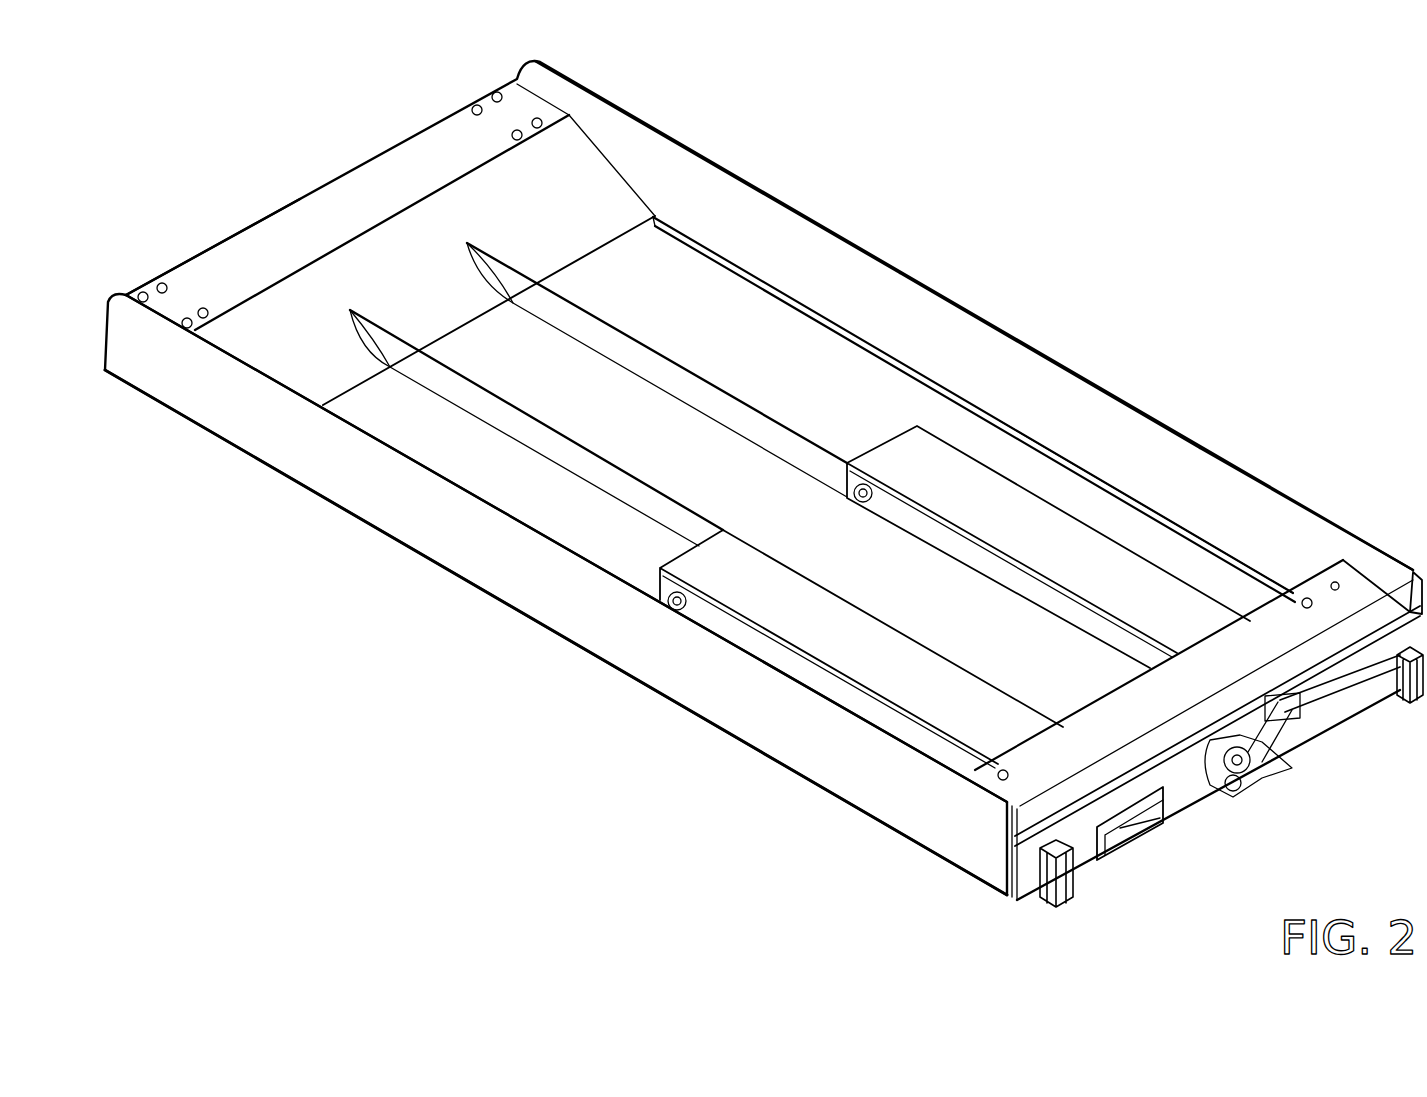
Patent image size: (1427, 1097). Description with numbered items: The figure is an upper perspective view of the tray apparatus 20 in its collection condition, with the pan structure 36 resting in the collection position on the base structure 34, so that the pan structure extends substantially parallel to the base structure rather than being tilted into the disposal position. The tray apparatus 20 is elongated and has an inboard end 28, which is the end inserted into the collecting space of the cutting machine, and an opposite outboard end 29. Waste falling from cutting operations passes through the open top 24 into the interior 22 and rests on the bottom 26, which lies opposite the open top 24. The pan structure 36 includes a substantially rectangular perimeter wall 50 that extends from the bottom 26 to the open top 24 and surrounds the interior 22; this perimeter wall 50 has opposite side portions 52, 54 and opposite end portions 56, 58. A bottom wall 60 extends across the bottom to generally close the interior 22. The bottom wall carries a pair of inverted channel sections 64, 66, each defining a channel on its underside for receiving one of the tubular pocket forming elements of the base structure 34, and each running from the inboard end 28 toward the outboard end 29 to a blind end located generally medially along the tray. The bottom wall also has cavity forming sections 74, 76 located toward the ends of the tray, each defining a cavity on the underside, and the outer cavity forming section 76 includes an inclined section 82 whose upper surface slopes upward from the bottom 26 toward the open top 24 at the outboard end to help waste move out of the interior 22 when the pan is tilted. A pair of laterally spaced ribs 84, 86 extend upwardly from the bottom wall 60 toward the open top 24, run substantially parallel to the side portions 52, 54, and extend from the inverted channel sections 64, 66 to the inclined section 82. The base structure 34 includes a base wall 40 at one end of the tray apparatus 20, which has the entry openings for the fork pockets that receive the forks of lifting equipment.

The tray apparatus 20 is at (1091, 239).
The interior 22 is at (1040, 407).
The open top 24 is at (1007, 512).
The bottom 26 is at (706, 718).
The inboard end 28 is at (347, 121).
The outboard end 29 is at (1107, 913).
The base structure 34 is at (1225, 817).
The pan structure 36 is at (890, 219).
The base wall 40 is at (1187, 797).
The perimeter wall 50 is at (1022, 325).
The side portion 52 is at (531, 585).
The side portion 54 is at (1245, 512).
The end portion 56 is at (252, 228).
The end portion 58 is at (1365, 622).
The bottom wall 60 is at (810, 390).
The inverted channel section 64 is at (765, 598).
The inverted channel section 66 is at (1087, 450).
The cavity forming section 74 is at (523, 107).
The cavity forming section 76 is at (1027, 752).
The inclined section 82 is at (587, 193).
The rib 84 is at (515, 428).
The rib 86 is at (595, 332).